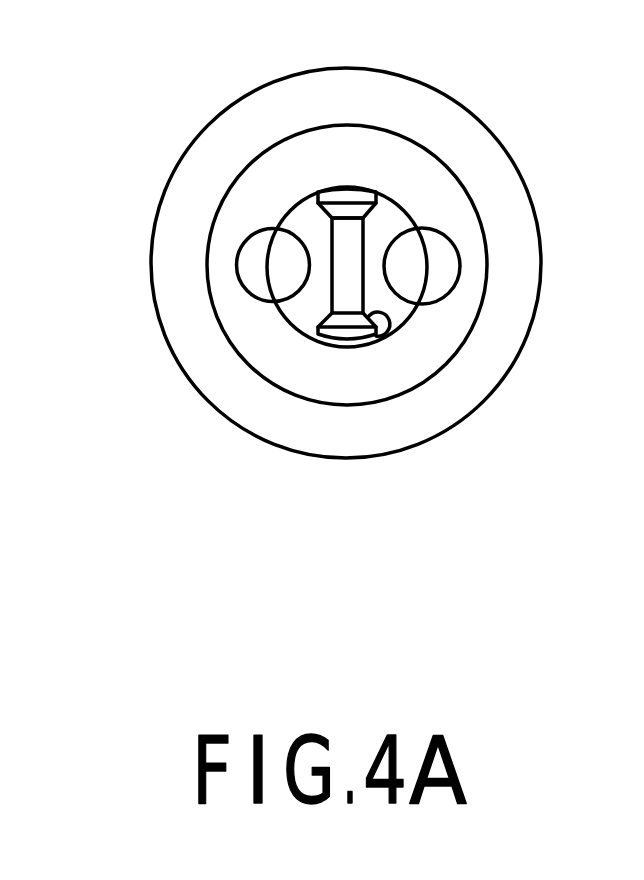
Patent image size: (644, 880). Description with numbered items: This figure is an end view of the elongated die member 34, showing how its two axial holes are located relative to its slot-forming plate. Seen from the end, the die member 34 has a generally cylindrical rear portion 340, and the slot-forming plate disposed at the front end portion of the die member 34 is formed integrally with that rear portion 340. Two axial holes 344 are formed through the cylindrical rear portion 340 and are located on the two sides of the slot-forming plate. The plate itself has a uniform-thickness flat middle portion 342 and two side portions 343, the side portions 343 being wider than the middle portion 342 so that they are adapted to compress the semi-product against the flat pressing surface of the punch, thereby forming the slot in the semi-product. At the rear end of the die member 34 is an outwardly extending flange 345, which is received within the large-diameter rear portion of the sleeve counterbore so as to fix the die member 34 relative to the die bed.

The elongated die member 34 is at (345, 312).
The generally cylindrical rear portion 340 is at (208, 267).
The uniform-thickness flat middle portion 342 is at (363, 277).
The side portions 343 is at (392, 328).
The axial holes 344 is at (260, 253).
The outwardly extending flange 345 is at (189, 383).